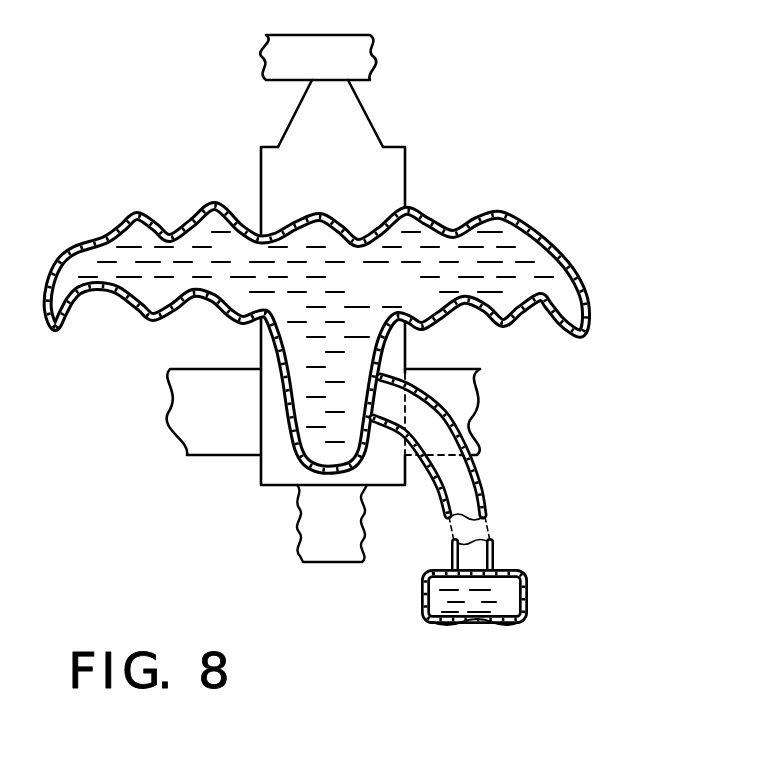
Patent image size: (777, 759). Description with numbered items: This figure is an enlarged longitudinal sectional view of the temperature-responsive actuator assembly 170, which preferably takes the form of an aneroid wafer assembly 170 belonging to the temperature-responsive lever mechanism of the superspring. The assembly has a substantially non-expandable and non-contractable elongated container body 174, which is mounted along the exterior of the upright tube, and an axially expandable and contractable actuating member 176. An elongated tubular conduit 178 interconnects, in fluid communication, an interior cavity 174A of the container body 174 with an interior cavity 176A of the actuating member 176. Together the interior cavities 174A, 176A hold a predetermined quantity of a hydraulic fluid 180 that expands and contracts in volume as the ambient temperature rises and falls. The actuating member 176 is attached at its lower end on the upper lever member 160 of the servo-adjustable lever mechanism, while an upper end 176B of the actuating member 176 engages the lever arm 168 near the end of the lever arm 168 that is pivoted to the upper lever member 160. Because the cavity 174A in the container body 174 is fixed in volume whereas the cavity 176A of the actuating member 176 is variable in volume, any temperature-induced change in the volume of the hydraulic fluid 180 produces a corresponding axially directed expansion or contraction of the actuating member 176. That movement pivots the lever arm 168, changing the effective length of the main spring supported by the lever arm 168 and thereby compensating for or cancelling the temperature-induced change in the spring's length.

The upper lever member 160 is at (210, 447).
The lever arm 168 is at (362, 53).
The temperature-responsive actuator assembly 170 is at (606, 204).
The elongated container body 174 is at (422, 599).
The interior cavity of the container body 174A is at (527, 608).
The actuating member 176 is at (405, 173).
The interior cavity of the actuating member 176A is at (313, 314).
The upper end of the actuating member 176B is at (360, 92).
The elongated tubular conduit 178 is at (483, 498).
The hydraulic fluid 180 is at (396, 297).